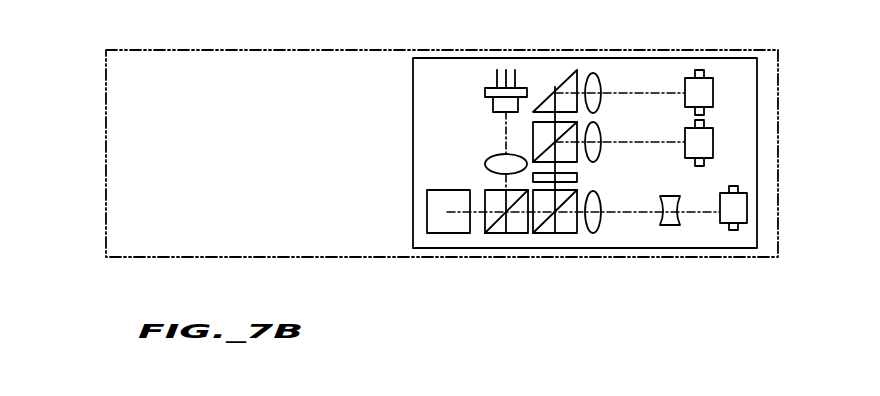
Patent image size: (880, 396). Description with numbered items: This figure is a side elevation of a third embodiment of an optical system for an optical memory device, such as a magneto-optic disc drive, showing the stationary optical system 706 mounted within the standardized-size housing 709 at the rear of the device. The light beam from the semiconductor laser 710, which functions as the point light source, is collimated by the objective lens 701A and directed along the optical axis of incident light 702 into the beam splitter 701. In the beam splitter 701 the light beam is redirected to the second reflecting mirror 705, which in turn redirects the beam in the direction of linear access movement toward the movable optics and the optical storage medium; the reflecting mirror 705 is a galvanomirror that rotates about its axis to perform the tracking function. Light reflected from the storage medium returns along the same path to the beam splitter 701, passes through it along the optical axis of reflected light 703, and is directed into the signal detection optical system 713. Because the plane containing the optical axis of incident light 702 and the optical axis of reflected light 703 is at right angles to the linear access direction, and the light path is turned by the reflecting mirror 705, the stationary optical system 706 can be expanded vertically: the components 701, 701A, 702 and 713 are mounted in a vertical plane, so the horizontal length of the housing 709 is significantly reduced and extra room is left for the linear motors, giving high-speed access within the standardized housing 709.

The housing 709 is at (279, 50).
The stationary optical system 706 is at (413, 95).
The semiconductor laser 710 is at (515, 79).
The optical axis of incident light 702 is at (492, 182).
The objective lens 701A is at (499, 160).
The second reflecting mirror 705 is at (434, 233).
The optical axis of reflected light 703 is at (474, 214).
The beam splitter 701 is at (517, 233).
The signal detection optical system 713 is at (713, 98).